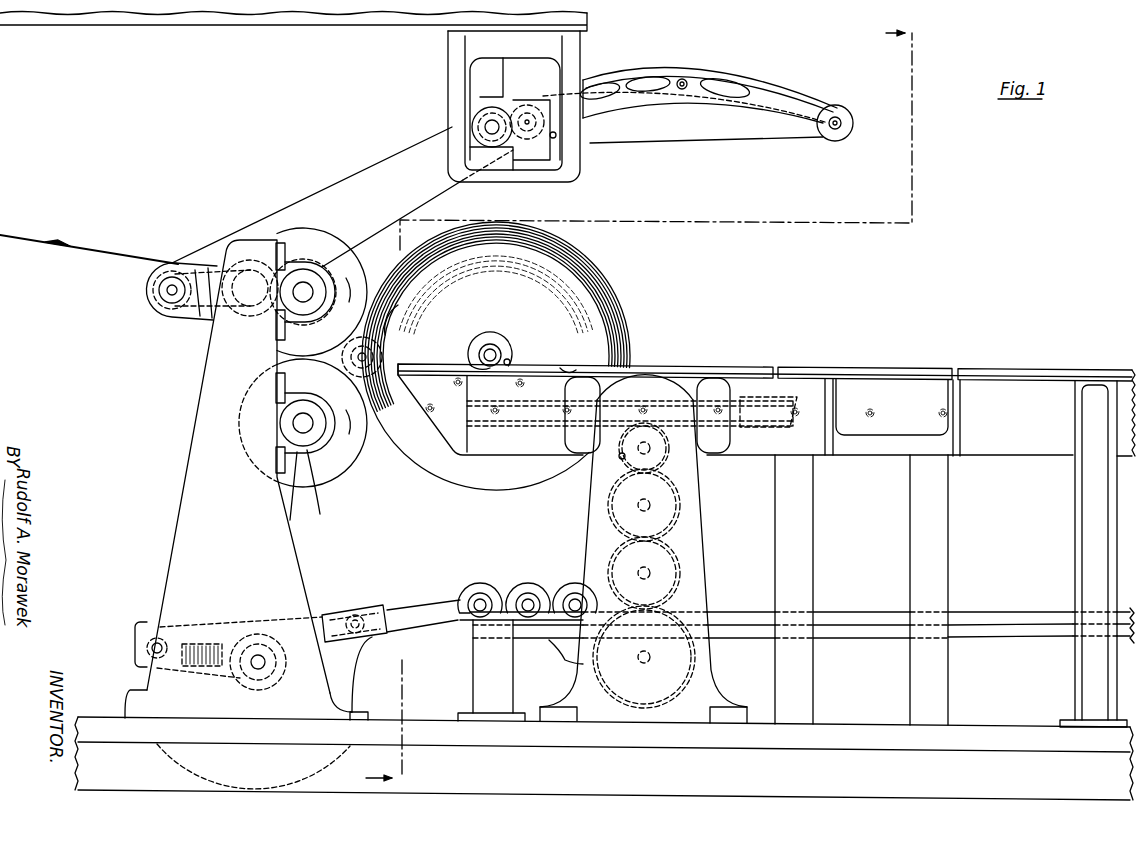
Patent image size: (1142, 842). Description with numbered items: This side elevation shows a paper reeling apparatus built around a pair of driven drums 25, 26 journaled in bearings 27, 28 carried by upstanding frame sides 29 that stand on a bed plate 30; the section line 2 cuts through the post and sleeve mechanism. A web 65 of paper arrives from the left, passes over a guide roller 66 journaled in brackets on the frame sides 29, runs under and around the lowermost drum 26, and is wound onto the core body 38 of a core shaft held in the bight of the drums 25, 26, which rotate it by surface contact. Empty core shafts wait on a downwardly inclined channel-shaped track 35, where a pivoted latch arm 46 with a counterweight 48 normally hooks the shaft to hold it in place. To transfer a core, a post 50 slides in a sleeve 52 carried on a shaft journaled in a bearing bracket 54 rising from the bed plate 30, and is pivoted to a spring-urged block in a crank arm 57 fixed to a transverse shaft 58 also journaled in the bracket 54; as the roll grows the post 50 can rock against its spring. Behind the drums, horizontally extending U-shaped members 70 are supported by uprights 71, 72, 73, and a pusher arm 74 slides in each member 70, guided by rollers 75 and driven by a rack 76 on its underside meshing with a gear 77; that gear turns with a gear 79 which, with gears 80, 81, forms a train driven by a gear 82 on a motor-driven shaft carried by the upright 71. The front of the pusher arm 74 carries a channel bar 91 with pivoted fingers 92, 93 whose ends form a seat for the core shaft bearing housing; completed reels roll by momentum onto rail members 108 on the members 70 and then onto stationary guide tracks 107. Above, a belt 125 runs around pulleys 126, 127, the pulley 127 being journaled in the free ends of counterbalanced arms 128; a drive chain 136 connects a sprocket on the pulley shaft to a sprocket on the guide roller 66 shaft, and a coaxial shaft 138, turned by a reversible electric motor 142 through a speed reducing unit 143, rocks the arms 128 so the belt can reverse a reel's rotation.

The section line 2- 2 is at (655, 409).
The drum 25 is at (293, 343).
The drum 26 is at (340, 470).
The bearing 27 is at (318, 262).
The bearing 28 is at (314, 493).
The frame side 29 is at (180, 507).
The bed plate 30 is at (93, 712).
The track 35 is at (738, 610).
The core body 38 is at (503, 342).
The arm 46 is at (550, 642).
The counterweight 48 is at (573, 663).
The post 50 is at (408, 607).
The sleeve 52 is at (377, 603).
The bearing bracket 54 is at (360, 657).
The crank arm 57 is at (190, 627).
The shaft 58 is at (267, 673).
The web 65 is at (88, 254).
The guide roller 66 is at (163, 320).
The U-shaped member 70 is at (528, 433).
The upright 71 is at (588, 538).
The upright 72 is at (777, 525).
The upright 73 is at (915, 525).
The pusher arm 74 is at (707, 402).
The roller 75 is at (790, 405).
The rack 76 is at (583, 427).
The gear 77 is at (622, 458).
The gear 79 is at (668, 457).
The gear 80 is at (681, 505).
The gear 81 is at (681, 563).
The gear 82 is at (696, 657).
The channel bar 91 is at (570, 367).
The finger 92 is at (477, 363).
The finger 93 is at (510, 360).
The guide track 107 is at (850, 368).
The rail member 108 is at (738, 368).
The belt 125 is at (738, 141).
The belt pulley 126 is at (556, 137).
The belt pulley 127 is at (825, 135).
The arm 128 is at (756, 77).
The drive chain 136 is at (368, 170).
The shaft 138 is at (545, 128).
The reversible electric motor 142 is at (480, 118).
The speed reducing unit 143 is at (490, 97).